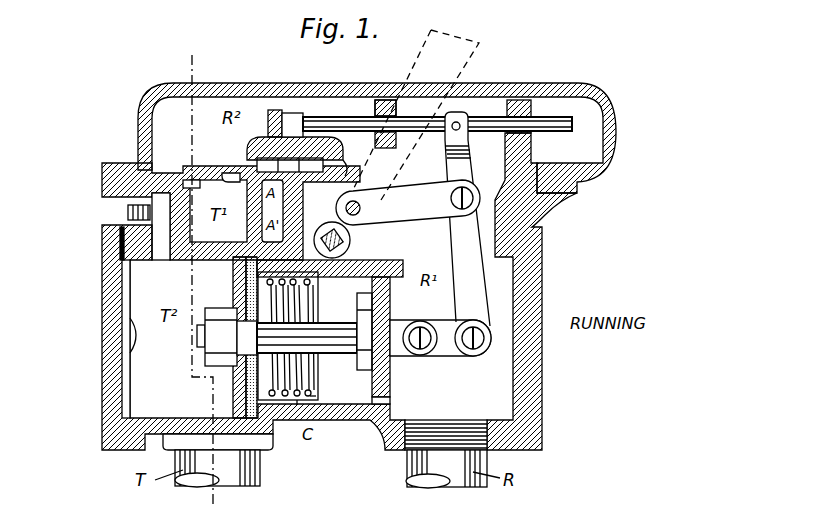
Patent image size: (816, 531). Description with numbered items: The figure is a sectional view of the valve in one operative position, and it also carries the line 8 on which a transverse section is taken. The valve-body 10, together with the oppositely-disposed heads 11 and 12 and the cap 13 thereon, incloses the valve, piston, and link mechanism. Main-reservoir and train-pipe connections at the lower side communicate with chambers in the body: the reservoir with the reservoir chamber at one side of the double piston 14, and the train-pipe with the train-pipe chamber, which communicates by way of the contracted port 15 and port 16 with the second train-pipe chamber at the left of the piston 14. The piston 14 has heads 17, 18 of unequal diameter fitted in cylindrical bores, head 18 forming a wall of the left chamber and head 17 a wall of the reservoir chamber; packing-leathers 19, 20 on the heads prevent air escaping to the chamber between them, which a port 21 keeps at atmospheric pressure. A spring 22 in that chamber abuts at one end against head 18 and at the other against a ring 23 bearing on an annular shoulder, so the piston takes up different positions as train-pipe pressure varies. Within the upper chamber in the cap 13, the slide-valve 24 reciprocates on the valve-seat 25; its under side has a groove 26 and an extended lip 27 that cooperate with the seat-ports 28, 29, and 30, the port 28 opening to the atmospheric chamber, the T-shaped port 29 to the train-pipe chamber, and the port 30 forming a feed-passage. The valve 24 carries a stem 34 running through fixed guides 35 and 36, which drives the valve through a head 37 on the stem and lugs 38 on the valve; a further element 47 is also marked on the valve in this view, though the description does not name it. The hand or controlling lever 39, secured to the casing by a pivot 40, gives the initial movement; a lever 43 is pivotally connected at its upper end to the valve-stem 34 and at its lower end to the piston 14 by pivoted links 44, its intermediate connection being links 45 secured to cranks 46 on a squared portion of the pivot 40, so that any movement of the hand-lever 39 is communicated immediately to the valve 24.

The section line 8 is at (201, 281).
The valve-body 10 is at (348, 412).
The head 11 is at (102, 430).
The head 12 is at (540, 252).
The cap 13 is at (541, 92).
The double piston 14 is at (323, 327).
The contracted port 15 is at (173, 212).
The port 16 is at (122, 248).
The piston-head 17 is at (388, 303).
The piston-head 18 is at (240, 373).
The packing-leather 19 is at (390, 399).
The packing-leather 20 is at (233, 260).
The port 21 is at (296, 408).
The spring 22 is at (280, 408).
The ring 23 is at (313, 392).
The slide-valve 24 is at (258, 150).
The valve-seat 25 is at (348, 168).
The recess or groove 26 is at (308, 165).
The extended lip 27 is at (245, 167).
The seat-port 28 is at (287, 165).
The seat-port 29 is at (213, 171).
The seat-port 30 is at (187, 175).
The stem 34 is at (378, 118).
The fixed guide 35 is at (383, 99).
The fixed guide 36 is at (511, 99).
The head 37 is at (292, 118).
The lug 38 is at (270, 118).
The hand or controlling lever 39 is at (416, 115).
The pivot 40 is at (330, 228).
The lever 43 is at (458, 239).
The pivoted link 44 is at (452, 350).
The link 45 is at (405, 210).
The crank 46 is at (357, 237).
The valve 47 is at (290, 165).